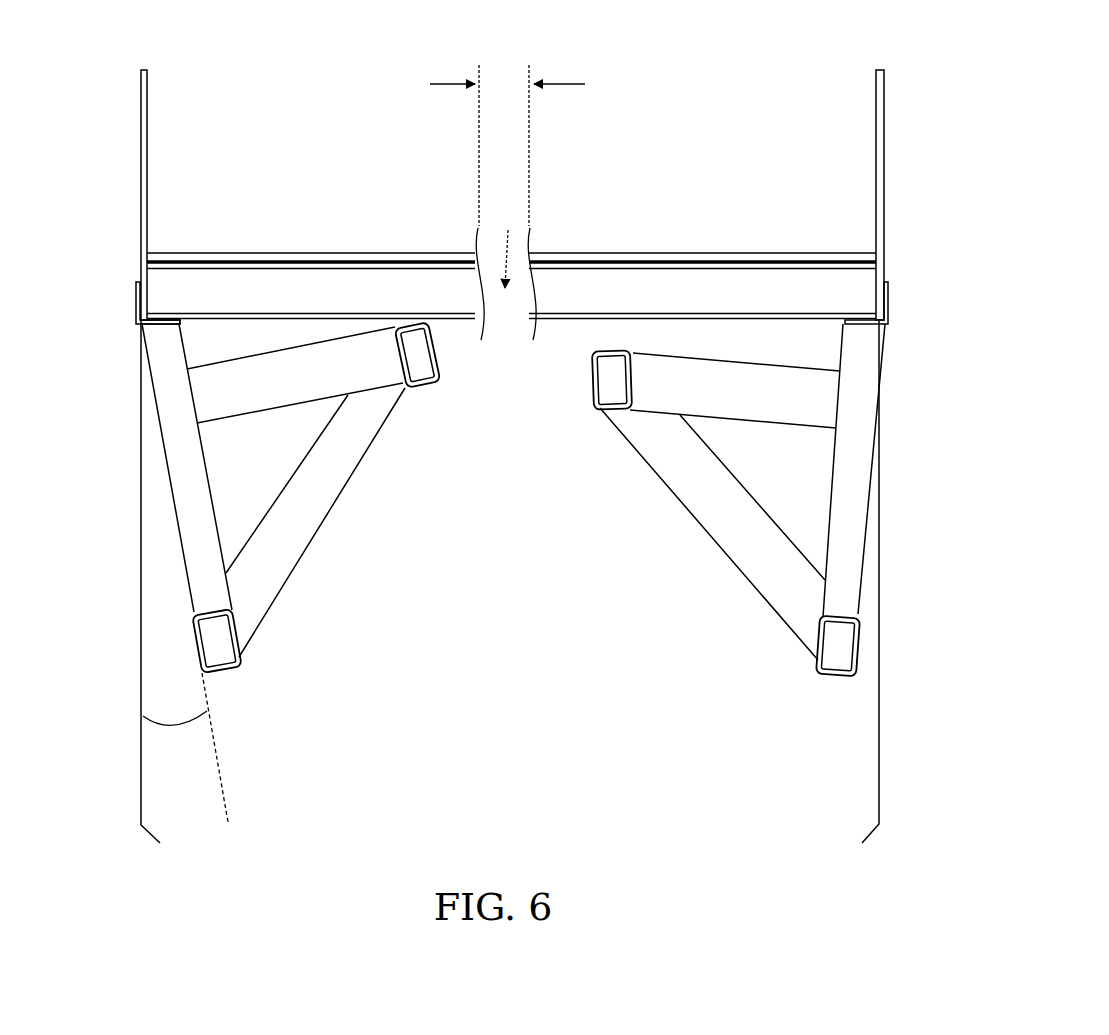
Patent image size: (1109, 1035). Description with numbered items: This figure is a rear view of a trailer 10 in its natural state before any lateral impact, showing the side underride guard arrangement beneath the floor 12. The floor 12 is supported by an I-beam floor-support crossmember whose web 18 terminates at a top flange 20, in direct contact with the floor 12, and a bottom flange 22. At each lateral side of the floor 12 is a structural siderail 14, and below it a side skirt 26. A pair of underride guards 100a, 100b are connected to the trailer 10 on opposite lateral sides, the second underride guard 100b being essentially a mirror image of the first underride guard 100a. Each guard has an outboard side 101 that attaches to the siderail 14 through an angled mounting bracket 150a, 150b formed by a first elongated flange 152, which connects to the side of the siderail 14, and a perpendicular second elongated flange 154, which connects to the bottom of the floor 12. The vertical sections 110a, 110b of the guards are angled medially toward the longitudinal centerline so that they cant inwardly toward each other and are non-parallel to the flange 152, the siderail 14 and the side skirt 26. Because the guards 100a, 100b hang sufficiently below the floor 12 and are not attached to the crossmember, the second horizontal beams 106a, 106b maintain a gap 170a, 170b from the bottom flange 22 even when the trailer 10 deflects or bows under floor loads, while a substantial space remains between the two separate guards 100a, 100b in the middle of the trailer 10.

The trailer 10 is at (915, 112).
The floor 12 is at (584, 255).
The structural siderail 14 is at (128, 267).
The web 18 is at (826, 287).
The top flange 20 is at (762, 268).
The bottom flange 22 is at (820, 322).
The side skirt 26 is at (141, 797).
The outboard side 101 is at (160, 587).
The first underride guard 100a is at (283, 668).
The second underride guard 100b is at (690, 578).
The second horizontal beam 106a is at (431, 407).
The second horizontal beam 106b is at (600, 410).
The vertical section 110a is at (201, 446).
The vertical section 110b is at (868, 448).
The mounting bracket 150a is at (130, 300).
The mounting bracket 150b is at (889, 308).
The first elongated flange 152 is at (136, 318).
The second elongated flange 154 is at (183, 324).
The gap 170a is at (442, 352).
The gap 170b is at (588, 340).